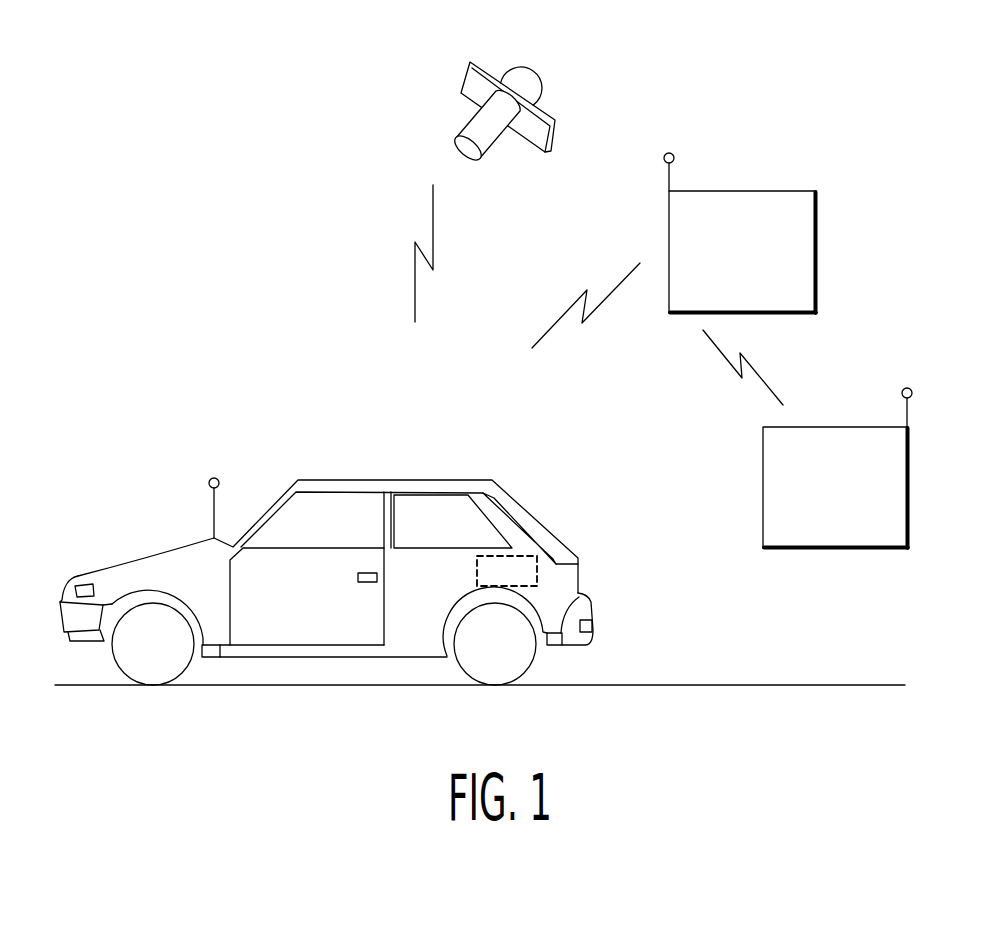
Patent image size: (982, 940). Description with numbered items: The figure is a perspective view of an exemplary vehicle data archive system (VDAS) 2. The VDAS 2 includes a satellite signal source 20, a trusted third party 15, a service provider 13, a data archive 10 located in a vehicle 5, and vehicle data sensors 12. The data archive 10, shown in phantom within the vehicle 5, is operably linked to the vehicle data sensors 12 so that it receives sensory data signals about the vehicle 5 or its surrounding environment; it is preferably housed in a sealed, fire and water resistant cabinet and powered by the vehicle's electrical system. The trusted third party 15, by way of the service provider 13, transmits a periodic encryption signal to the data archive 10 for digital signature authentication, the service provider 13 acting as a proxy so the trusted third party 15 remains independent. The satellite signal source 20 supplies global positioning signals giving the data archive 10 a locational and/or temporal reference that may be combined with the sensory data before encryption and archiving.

The vehicle data archive system 2 is at (176, 295).
The vehicle 5 is at (592, 625).
The data archive 10 is at (527, 553).
The vehicle data sensor 12 is at (213, 643).
The service provider 13 is at (740, 191).
The trusted third party 15 is at (862, 427).
The satellite signal source 20 is at (513, 72).